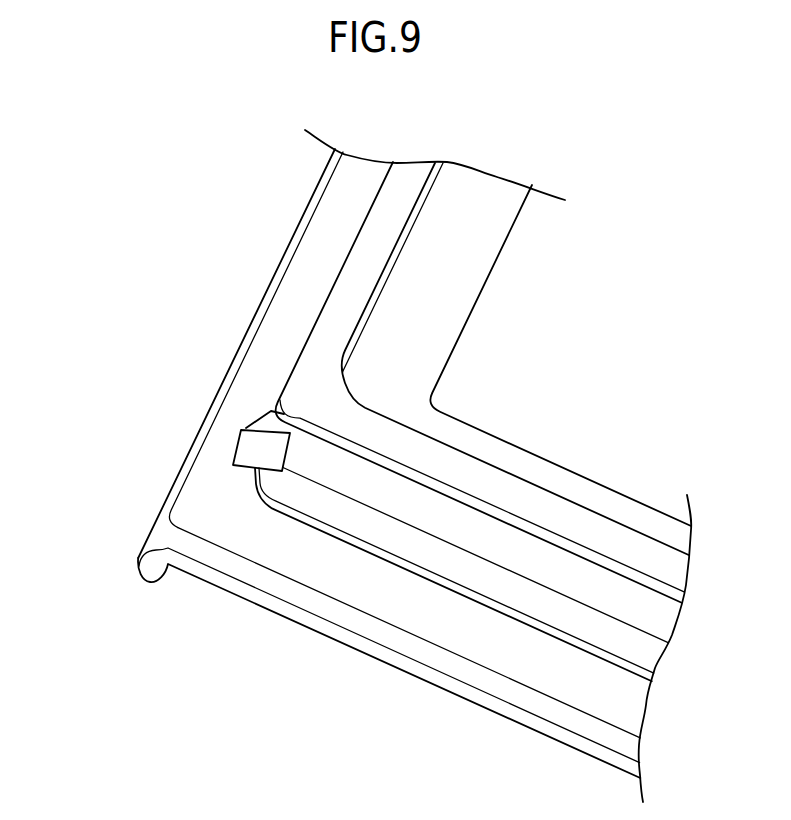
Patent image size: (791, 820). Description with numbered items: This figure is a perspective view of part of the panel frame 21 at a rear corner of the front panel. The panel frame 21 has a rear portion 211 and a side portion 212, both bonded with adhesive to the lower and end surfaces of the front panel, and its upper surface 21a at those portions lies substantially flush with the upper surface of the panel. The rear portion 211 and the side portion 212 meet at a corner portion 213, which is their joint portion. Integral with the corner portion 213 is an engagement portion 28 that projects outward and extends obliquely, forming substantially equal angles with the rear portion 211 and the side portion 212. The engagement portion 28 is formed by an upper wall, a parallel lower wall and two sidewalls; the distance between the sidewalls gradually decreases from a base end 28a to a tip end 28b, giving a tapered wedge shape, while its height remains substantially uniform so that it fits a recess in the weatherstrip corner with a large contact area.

The panel frame 21 is at (343, 657).
The upper surface 21a is at (578, 517).
The rear portion 211 is at (618, 692).
The side portion 212 is at (365, 178).
The corner portion 213 is at (128, 567).
The engagement portion 28 is at (130, 348).
The base end 28a is at (271, 411).
The tip end 28b is at (236, 448).